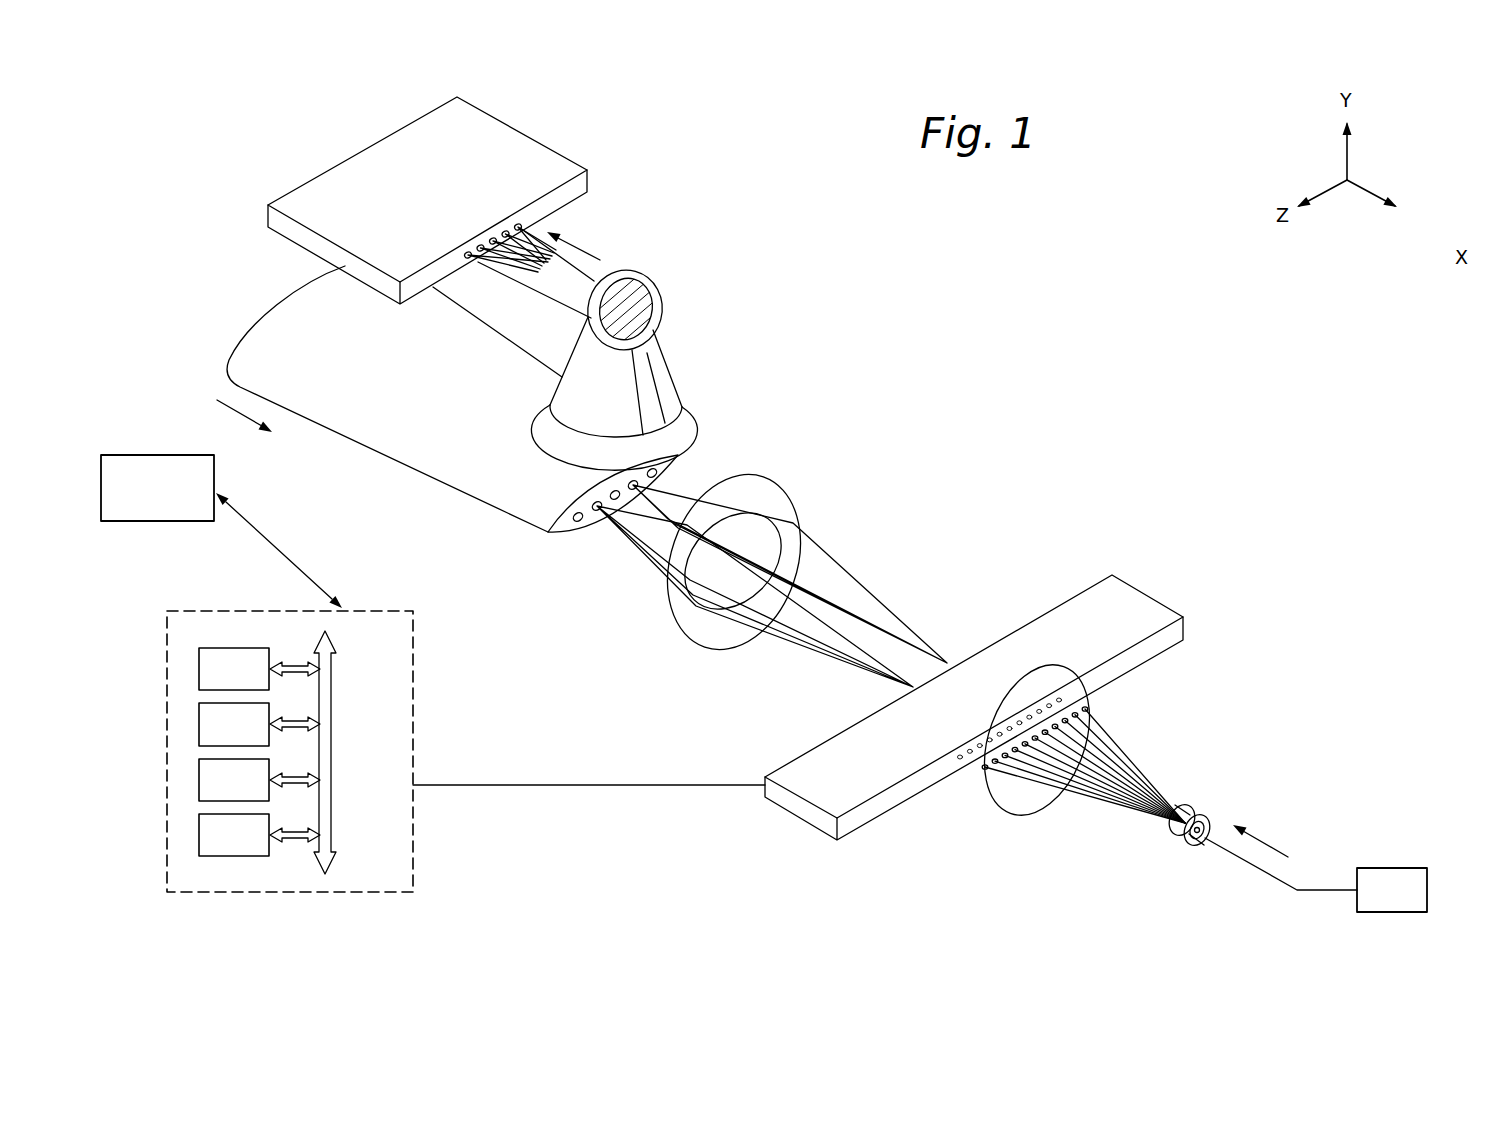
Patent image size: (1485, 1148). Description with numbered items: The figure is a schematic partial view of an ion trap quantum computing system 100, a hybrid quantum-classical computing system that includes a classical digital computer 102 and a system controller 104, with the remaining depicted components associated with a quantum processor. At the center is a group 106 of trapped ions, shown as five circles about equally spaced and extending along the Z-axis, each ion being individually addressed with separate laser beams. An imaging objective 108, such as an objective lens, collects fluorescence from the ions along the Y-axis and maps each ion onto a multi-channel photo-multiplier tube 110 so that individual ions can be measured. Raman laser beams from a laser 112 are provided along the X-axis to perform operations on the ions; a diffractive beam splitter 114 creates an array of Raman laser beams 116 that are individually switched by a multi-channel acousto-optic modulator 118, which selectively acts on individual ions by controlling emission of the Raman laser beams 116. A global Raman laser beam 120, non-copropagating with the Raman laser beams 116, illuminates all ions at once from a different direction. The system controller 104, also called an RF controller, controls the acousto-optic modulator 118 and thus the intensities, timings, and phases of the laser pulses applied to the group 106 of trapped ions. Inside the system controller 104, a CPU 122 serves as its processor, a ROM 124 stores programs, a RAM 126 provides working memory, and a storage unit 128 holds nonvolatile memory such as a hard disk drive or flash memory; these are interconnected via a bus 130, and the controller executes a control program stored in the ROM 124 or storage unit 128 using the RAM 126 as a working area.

The ion trap quantum computing system 100 is at (930, 392).
The classical computer 102 is at (175, 501).
The system controller 104 is at (250, 611).
The group of trapped ions 106 is at (595, 545).
The imaging objective 108 is at (667, 357).
The multi-channel photo-multiplier tube 110 is at (520, 128).
The laser 112 is at (1410, 902).
The diffractive beam splitter 114 is at (1192, 807).
The array of Raman laser beams 116 is at (688, 644).
The multi-channel acousto-optic modulator 118 is at (1147, 596).
The global Raman laser beam 120 is at (393, 487).
The CPU 122 is at (252, 681).
The ROM 124 is at (252, 736).
The RAM 126 is at (252, 792).
The storage unit 128 is at (252, 847).
The bus 130 is at (332, 754).